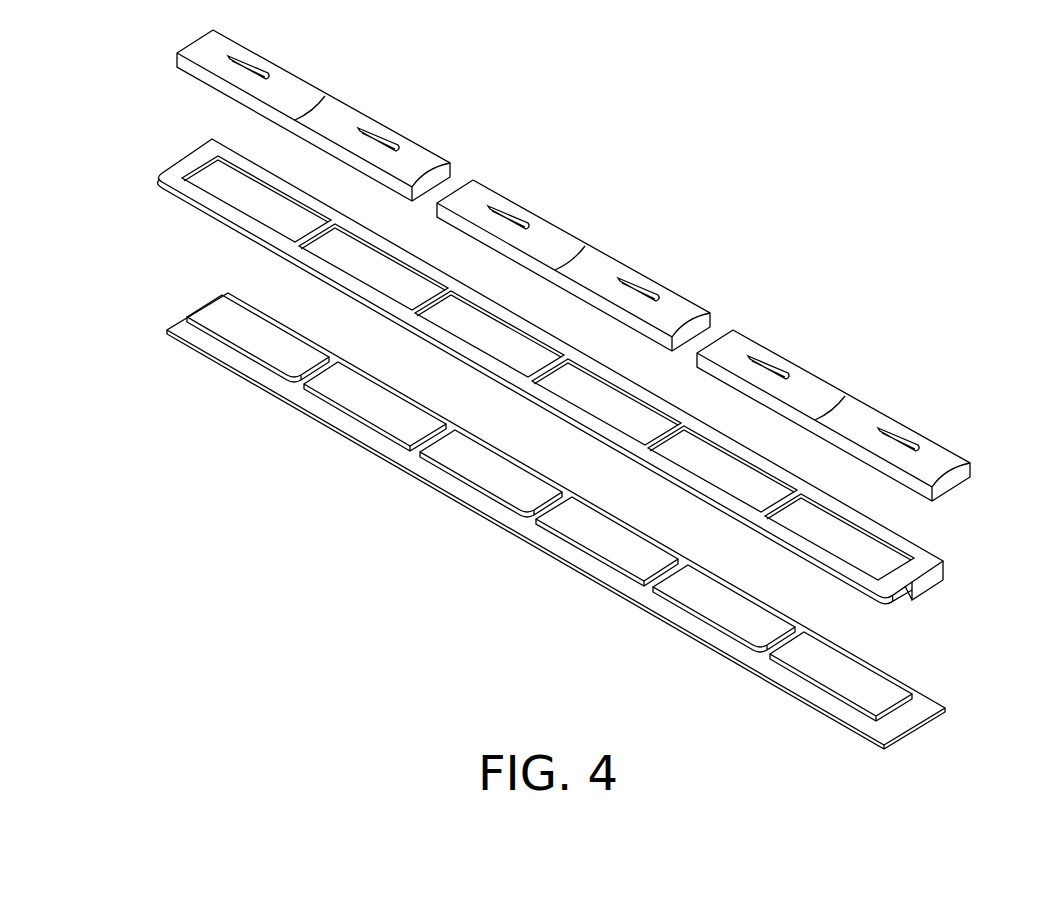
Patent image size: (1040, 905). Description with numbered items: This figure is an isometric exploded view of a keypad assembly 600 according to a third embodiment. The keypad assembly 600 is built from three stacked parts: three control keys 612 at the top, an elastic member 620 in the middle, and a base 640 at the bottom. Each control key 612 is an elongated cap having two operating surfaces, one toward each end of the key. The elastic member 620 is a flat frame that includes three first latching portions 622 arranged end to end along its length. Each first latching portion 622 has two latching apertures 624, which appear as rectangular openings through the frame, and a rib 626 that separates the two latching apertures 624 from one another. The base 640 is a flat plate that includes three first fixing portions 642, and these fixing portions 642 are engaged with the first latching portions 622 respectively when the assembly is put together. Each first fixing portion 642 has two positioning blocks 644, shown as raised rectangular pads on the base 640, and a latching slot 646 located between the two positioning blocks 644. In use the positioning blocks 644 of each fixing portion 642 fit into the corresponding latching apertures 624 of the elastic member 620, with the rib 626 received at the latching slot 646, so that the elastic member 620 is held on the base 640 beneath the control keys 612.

The keypad assembly 600 is at (594, 30).
The control key 612 is at (362, 120).
The elastic member 620 is at (946, 552).
The first latching portion 622 is at (117, 207).
The latching aperture 624 is at (265, 203).
The rib 626 is at (308, 235).
The base 640 is at (940, 692).
The first fixing portion 642 is at (172, 376).
The positioning block 644 is at (363, 402).
The latching slot 646 is at (323, 365).